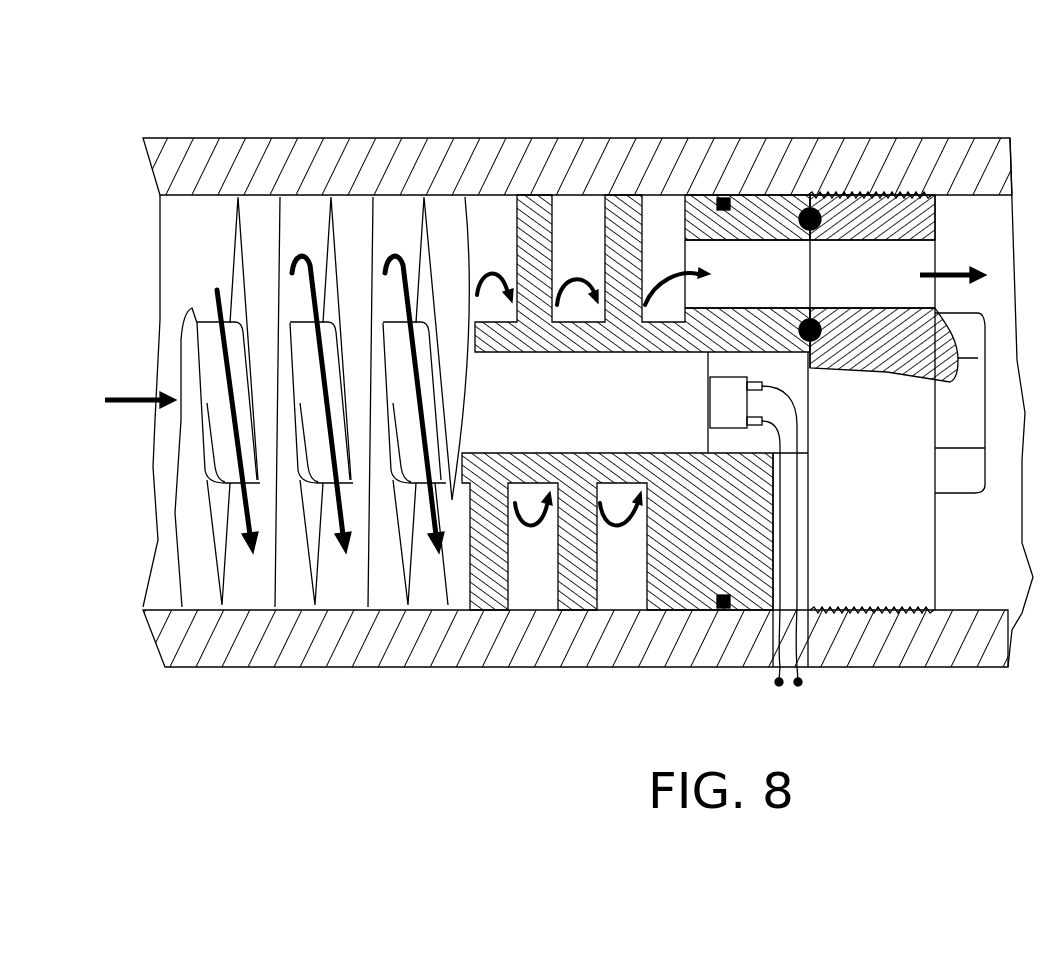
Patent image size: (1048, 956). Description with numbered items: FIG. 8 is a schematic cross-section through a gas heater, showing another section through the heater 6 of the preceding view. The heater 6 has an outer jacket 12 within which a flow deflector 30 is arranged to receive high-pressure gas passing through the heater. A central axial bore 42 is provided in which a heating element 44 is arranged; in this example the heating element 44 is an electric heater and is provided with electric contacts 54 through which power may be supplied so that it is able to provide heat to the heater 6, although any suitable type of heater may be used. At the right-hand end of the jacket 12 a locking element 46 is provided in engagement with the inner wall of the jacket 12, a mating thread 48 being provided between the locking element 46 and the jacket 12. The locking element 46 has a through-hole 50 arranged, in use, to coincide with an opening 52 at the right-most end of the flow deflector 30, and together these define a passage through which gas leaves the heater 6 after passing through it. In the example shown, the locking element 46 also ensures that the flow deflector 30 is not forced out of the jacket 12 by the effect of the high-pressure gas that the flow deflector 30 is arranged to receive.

The heater 6 is at (652, 115).
The jacket 12 is at (590, 657).
The flow deflector 30 is at (295, 598).
The central axial bore 42 is at (742, 441).
The heating element 44 is at (694, 366).
The locking element 46 is at (926, 195).
The mating thread 48 is at (868, 194).
The through-hole 50 is at (940, 255).
The opening 52 is at (812, 272).
The electric contacts 54 is at (798, 686).